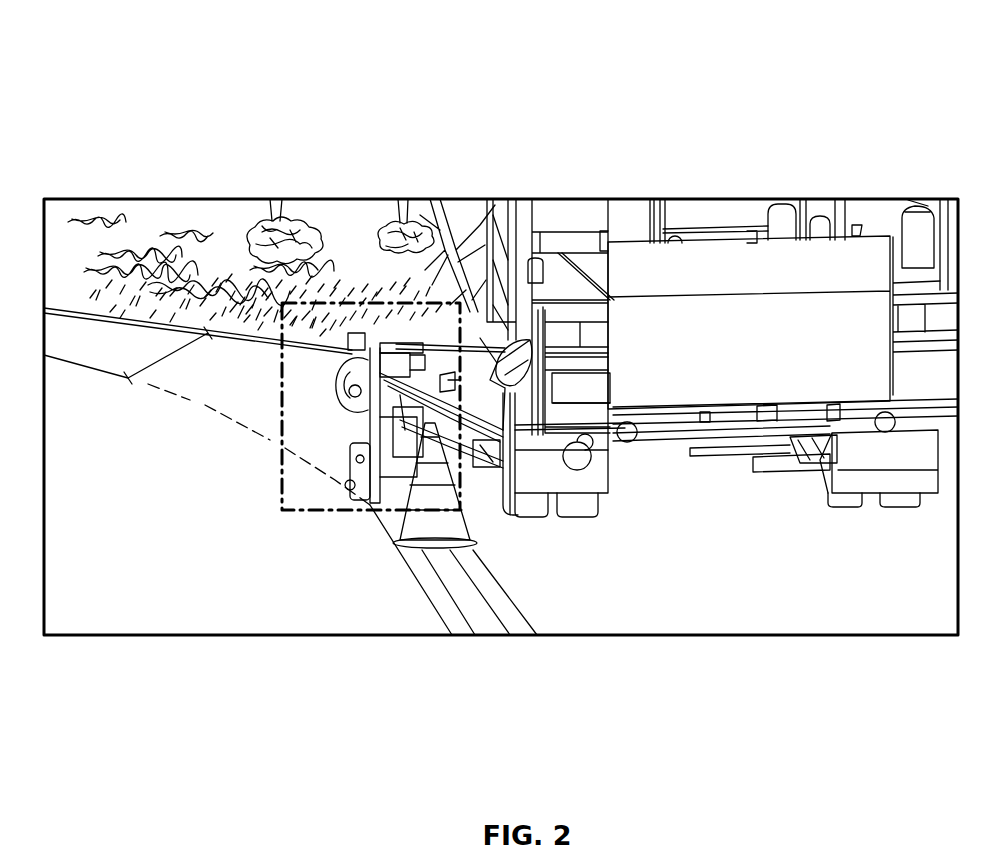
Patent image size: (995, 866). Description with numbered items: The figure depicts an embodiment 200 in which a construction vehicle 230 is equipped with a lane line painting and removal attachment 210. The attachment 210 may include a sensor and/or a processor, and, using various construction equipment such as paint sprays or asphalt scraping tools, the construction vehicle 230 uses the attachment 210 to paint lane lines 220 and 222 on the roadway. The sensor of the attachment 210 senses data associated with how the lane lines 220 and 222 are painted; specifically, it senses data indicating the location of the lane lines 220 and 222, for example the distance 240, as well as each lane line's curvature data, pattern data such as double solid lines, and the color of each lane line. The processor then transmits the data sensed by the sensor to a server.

The embodiment 200 is at (787, 86).
The lane line painting and removal attachment 210 is at (280, 418).
The lane line 220 is at (418, 580).
The lane line 222 is at (508, 604).
The construction vehicle 230 is at (650, 437).
The distance 240 is at (168, 355).